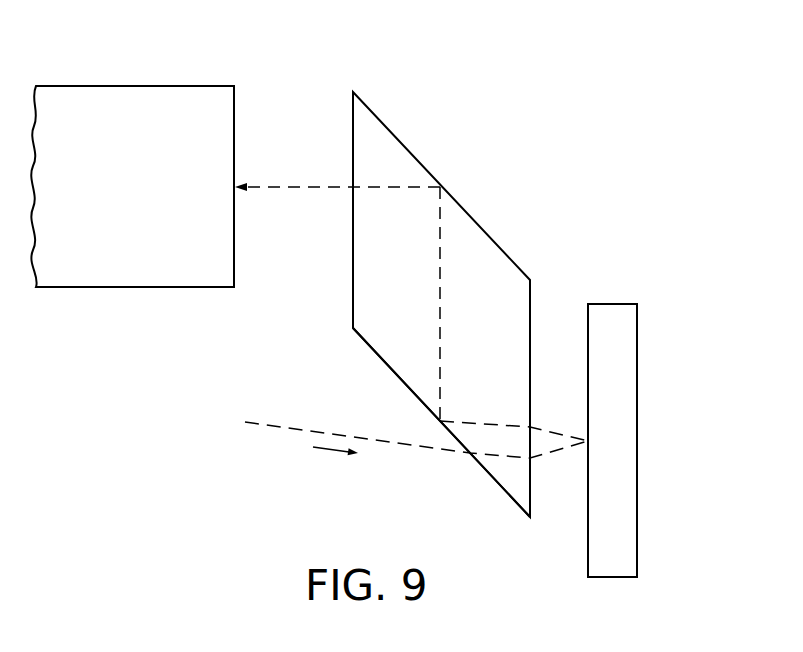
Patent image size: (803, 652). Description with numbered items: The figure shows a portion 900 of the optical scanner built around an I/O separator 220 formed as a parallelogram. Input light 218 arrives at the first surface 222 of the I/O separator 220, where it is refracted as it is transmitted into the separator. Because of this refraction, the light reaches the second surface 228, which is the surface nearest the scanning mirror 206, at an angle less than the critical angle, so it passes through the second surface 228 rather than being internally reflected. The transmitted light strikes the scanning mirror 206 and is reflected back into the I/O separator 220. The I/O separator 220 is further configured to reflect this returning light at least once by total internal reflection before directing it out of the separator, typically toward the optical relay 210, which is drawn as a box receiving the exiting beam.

The portion of the optical scanner 900 is at (567, 76).
The optical relay 210 is at (157, 203).
The I/O separator 220 is at (420, 160).
The second surface 228 is at (541, 299).
The first surface 222 is at (489, 488).
The light 218 is at (283, 428).
The scanning mirror 206 is at (637, 463).